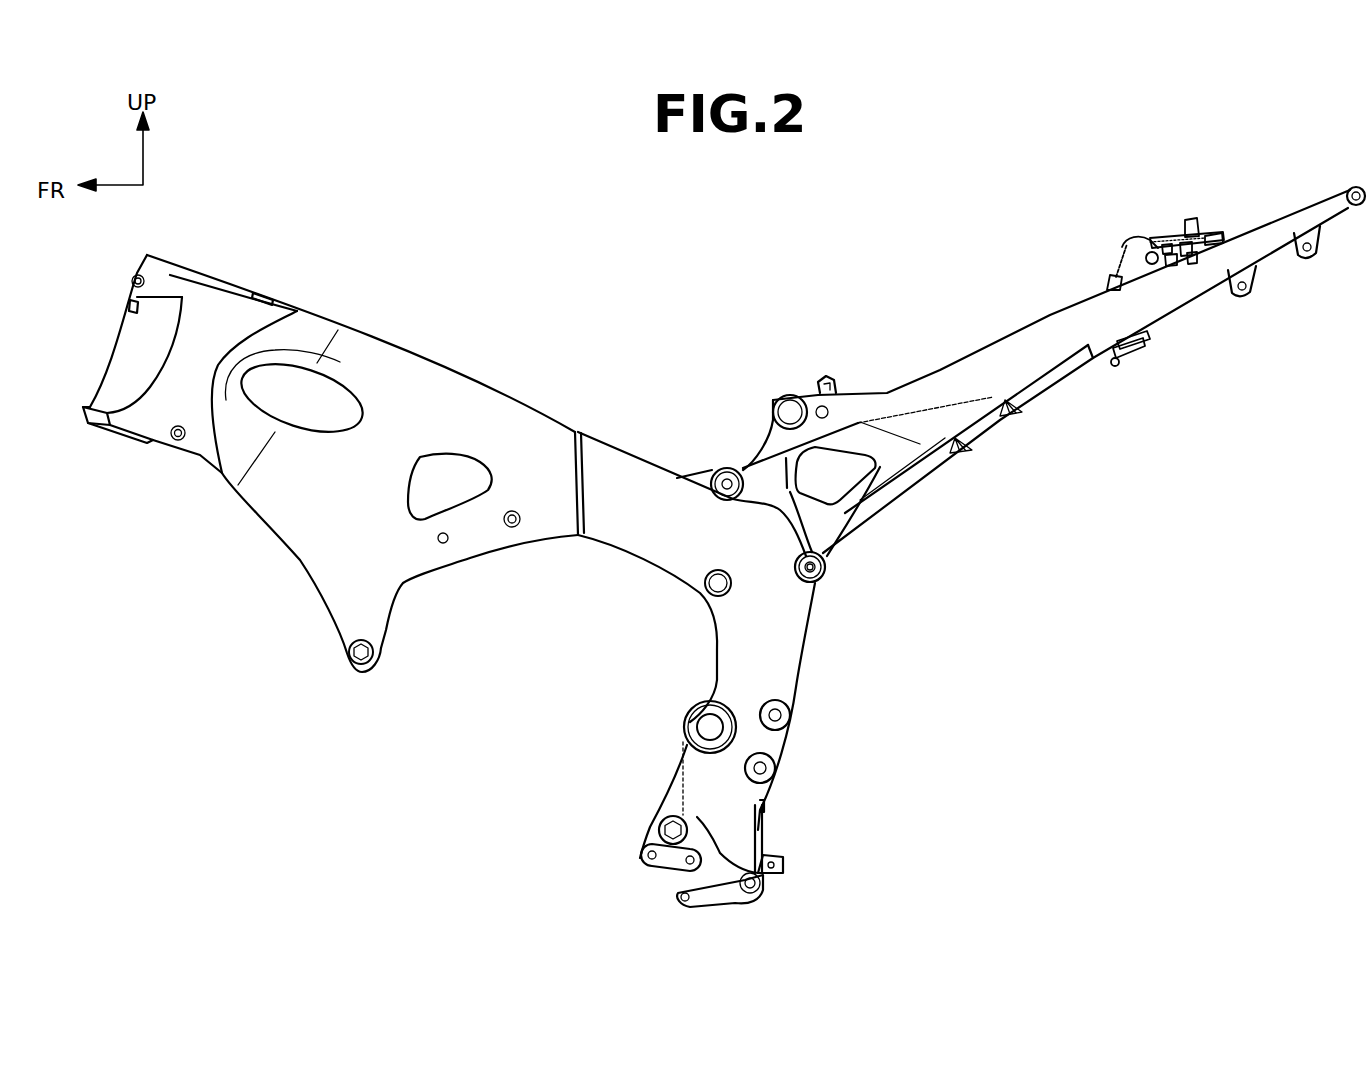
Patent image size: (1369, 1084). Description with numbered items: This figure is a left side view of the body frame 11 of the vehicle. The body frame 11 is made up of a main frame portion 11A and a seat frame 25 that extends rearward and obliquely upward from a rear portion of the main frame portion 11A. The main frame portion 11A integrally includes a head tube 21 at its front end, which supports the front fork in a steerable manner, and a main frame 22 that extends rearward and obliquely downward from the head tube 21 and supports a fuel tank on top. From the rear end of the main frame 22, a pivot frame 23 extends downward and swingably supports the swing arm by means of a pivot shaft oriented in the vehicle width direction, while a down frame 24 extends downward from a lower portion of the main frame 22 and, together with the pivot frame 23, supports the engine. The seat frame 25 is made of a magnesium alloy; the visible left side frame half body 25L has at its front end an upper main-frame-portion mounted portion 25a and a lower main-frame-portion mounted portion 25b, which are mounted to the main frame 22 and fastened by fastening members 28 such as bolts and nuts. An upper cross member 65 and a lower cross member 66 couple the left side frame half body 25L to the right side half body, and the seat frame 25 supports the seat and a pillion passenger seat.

The body frame 11 is at (296, 201).
The main frame portion 11A is at (428, 355).
The head tube 21 is at (150, 332).
The main frame 22 is at (467, 408).
The pivot frame 23 is at (770, 665).
The down frame 24 is at (338, 597).
The seat frame 25 is at (1025, 363).
The upper main-frame-portion mounted portion 25a is at (740, 465).
The lower main-frame-portion mounted portion 25b is at (820, 548).
The left side frame half body 25L is at (1055, 345).
The fastening member 28 is at (722, 470).
The upper cross member 65 is at (1133, 238).
The lower cross member 66 is at (1120, 368).